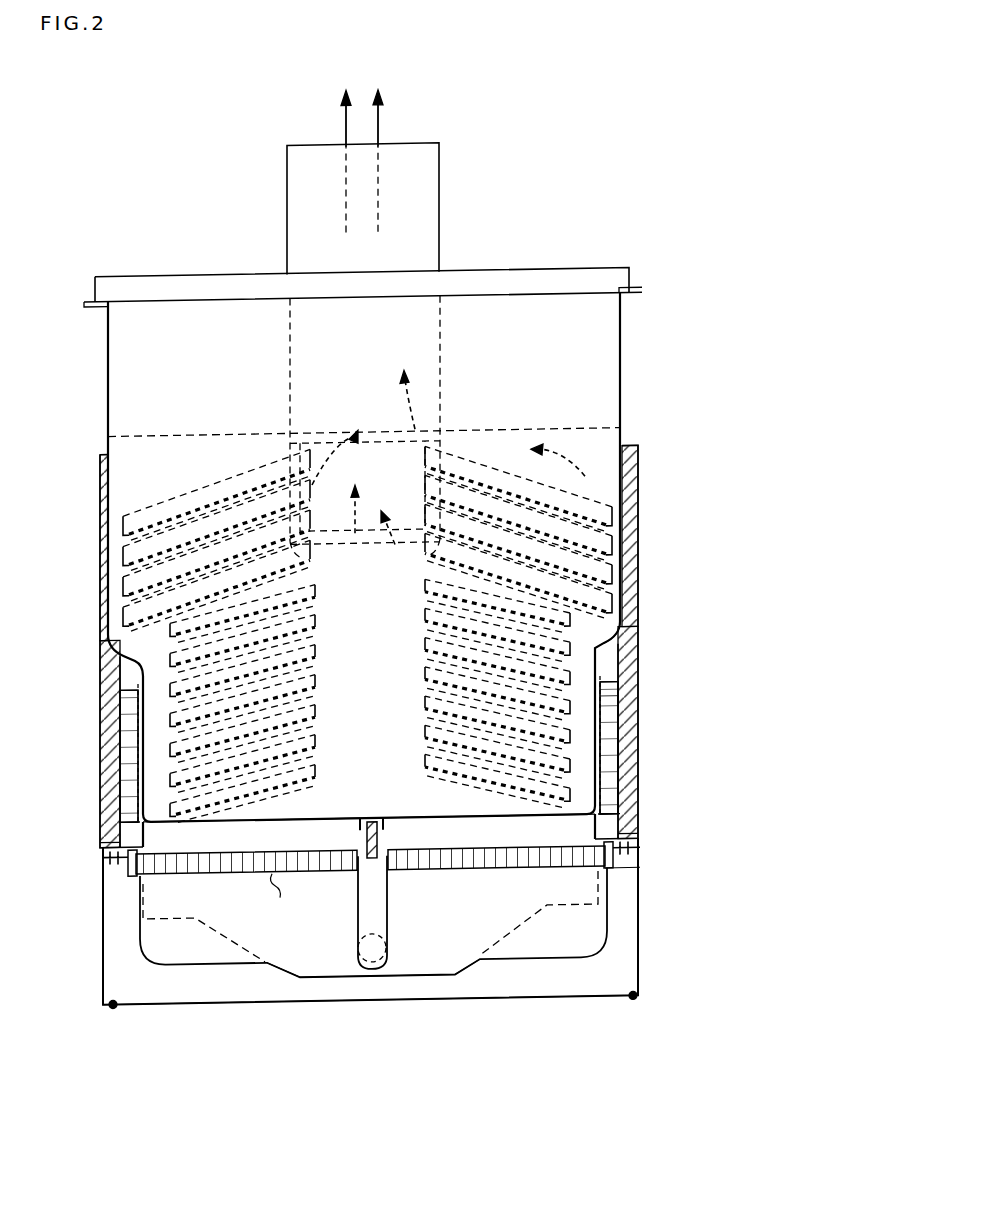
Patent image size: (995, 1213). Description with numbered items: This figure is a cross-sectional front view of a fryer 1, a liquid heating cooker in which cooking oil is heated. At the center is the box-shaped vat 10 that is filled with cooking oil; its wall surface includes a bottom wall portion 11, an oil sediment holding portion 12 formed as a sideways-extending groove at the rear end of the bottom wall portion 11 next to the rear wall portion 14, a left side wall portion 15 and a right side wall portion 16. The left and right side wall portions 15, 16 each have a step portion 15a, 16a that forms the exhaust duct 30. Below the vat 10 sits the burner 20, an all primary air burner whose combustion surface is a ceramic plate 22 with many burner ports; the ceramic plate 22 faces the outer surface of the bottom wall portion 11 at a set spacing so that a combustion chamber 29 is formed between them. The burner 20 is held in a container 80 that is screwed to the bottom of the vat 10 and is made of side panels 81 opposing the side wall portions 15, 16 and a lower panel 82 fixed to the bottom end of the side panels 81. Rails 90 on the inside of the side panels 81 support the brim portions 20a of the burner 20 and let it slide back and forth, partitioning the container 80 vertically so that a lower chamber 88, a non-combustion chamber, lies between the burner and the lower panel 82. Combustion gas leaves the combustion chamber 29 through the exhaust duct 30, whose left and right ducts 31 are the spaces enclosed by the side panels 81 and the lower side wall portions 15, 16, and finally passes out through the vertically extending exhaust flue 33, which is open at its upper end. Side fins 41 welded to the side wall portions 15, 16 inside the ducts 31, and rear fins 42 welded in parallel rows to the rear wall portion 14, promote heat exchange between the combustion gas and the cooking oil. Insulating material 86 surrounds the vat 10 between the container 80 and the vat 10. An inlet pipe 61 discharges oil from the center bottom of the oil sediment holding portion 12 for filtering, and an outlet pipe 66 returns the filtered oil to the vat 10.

The fryer 1 is at (553, 167).
The vat 10 is at (559, 247).
The bottom wall portion 11 is at (410, 818).
The oil sediment holding portion 12 is at (322, 980).
The rear wall portion 14 is at (608, 323).
The left side wall portion 15 is at (106, 354).
The step portion 15a is at (125, 656).
The right side wall portion 16 is at (622, 360).
The step portion 16a is at (634, 646).
The burner 20 is at (602, 953).
The brim portions 20a is at (619, 859).
The ceramic plate 22 is at (214, 850).
The combustion chamber 29 is at (336, 830).
The exhaust duct 30 is at (615, 731).
The left and right ducts 31 is at (113, 716).
The exhaust flue 33 is at (440, 177).
The side fins 41 is at (115, 756).
The rear fins 42 is at (575, 487).
The inlet pipe 61 is at (365, 975).
The outlet pipe 66 is at (282, 882).
The container 80 is at (659, 976).
The side panels 81 is at (99, 580).
The lower panel 82 is at (540, 1000).
The insulating material 86 is at (102, 836).
The lower chamber 88 is at (186, 1000).
The rails 90 is at (643, 851).